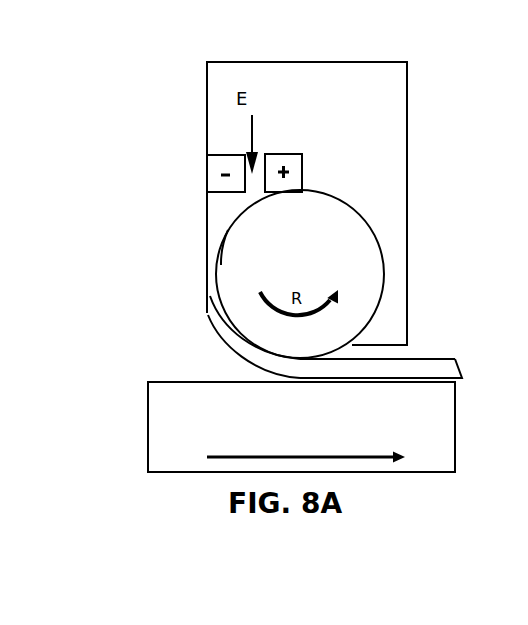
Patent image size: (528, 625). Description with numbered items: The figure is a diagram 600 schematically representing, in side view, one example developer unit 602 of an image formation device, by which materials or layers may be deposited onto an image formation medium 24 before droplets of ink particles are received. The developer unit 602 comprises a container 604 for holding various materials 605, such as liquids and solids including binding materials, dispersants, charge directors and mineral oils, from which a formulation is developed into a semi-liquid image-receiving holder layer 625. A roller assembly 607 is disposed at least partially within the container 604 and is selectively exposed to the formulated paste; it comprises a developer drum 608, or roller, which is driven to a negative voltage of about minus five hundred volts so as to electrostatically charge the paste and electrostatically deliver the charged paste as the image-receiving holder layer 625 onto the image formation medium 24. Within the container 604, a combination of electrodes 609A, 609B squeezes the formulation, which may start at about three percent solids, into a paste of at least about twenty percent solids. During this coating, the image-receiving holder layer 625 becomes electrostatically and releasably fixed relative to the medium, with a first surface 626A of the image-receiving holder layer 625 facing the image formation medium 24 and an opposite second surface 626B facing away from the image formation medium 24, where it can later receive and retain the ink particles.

The diagram 600 is at (147, 74).
The developer unit 602 is at (415, 172).
The container 604 is at (408, 247).
The materials 605 is at (355, 113).
The roller assembly 607 is at (226, 244).
The developer drum 608 is at (318, 229).
The electrode 609A is at (207, 172).
The electrode 609B is at (303, 175).
The image-receiving holder layer 625 is at (445, 338).
The first surface 626A is at (210, 333).
The second surface 626B is at (417, 356).
The image formation medium 24 is at (456, 432).